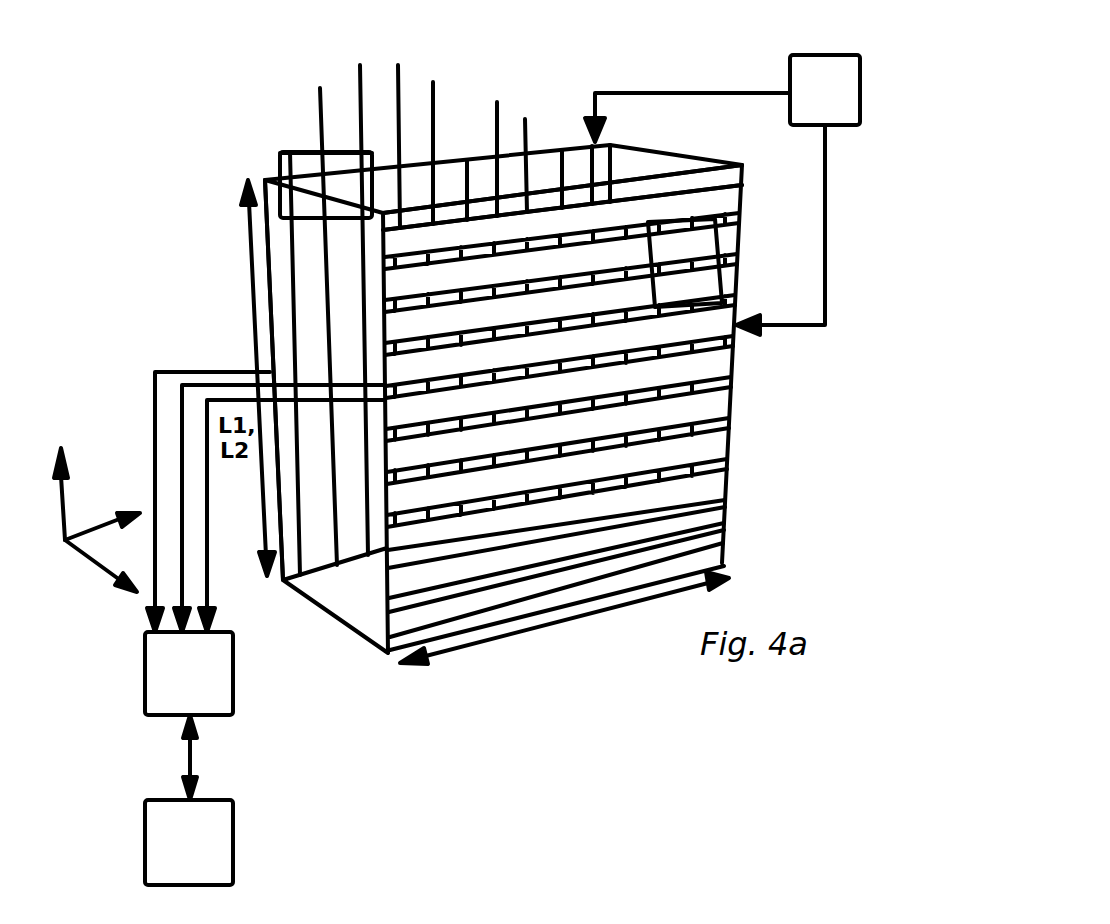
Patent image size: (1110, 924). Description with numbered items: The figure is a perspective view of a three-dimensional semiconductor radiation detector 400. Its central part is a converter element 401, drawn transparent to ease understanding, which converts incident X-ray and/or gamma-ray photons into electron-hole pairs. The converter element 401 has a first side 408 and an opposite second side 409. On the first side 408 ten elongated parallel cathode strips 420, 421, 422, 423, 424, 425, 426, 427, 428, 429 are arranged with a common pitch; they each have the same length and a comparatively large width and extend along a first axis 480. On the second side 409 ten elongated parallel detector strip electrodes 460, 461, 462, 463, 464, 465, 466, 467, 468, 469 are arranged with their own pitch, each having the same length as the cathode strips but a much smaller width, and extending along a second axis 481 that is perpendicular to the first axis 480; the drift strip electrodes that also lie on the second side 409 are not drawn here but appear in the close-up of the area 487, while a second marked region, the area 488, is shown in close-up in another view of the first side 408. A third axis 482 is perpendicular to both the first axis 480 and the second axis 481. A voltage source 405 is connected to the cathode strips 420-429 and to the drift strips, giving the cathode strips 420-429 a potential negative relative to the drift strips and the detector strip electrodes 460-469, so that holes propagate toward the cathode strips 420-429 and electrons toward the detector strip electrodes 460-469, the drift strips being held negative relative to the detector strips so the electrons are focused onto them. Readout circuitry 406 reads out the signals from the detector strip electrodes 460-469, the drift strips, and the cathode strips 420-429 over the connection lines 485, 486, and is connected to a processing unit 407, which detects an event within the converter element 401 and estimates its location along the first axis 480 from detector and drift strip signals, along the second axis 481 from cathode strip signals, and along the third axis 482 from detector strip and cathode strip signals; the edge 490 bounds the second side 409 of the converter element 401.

The radiation detector 400 is at (745, 18).
The converter element 401 is at (368, 643).
The voltage source 405 is at (858, 55).
The readout circuitry 406 is at (233, 690).
The processing unit 407 is at (233, 853).
The first side 408 is at (605, 618).
The second side 409 is at (471, 360).
The cathode strip 420 is at (743, 190).
The cathode strip 421 is at (740, 234).
The cathode strip 422 is at (738, 280).
The cathode strip 423 is at (736, 316).
The cathode strip 424 is at (733, 366).
The cathode strip 425 is at (731, 401).
The cathode strip 426 is at (730, 436).
The cathode strip 427 is at (728, 473).
The cathode strip 428 is at (726, 508).
The cathode strip 429 is at (724, 547).
The detector strip electrode 460 is at (277, 152).
The detector strip electrode 461 is at (320, 88).
The detector strip electrode 462 is at (360, 65).
The detector strip electrode 463 is at (398, 65).
The detector strip electrode 464 is at (433, 82).
The detector strip electrode 465 is at (467, 158).
The detector strip electrode 466 is at (497, 102).
The detector strip electrode 467 is at (525, 119).
The detector strip electrode 468 is at (567, 152).
The detector strip electrode 469 is at (597, 143).
The first axis 480 is at (90, 540).
The second axis 481 is at (65, 485).
The third axis 482 is at (95, 570).
The signal line 485 is at (152, 415).
The signal line 486 is at (193, 383).
The area 487 is at (315, 153).
The area 488 is at (740, 256).
The side edge 490 is at (270, 320).